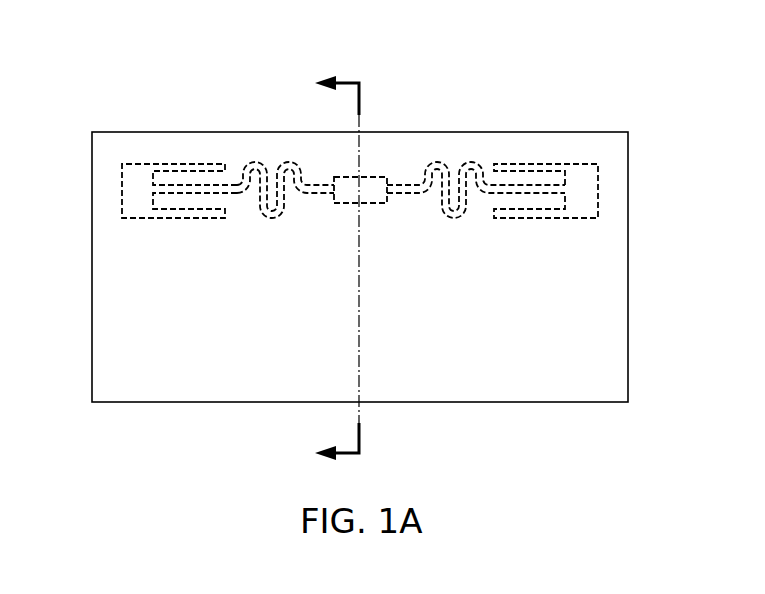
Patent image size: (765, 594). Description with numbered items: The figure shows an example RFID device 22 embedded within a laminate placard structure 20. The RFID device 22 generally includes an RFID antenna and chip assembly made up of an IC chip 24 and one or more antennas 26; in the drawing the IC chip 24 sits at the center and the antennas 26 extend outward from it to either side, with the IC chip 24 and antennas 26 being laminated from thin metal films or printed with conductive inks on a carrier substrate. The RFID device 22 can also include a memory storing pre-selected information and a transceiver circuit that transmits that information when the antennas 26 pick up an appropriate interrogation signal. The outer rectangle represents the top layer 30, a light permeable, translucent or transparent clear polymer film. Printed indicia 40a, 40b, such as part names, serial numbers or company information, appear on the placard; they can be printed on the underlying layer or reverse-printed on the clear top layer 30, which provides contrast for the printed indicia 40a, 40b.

The laminate placard structure 20 is at (358, 260).
The RFID device 22 is at (432, 146).
The IC chip 24 is at (334, 203).
The antennas 26 is at (131, 219).
The top layer 30 is at (553, 376).
The printed indicia 40a is at (266, 359).
The printed indicia 40b is at (500, 278).